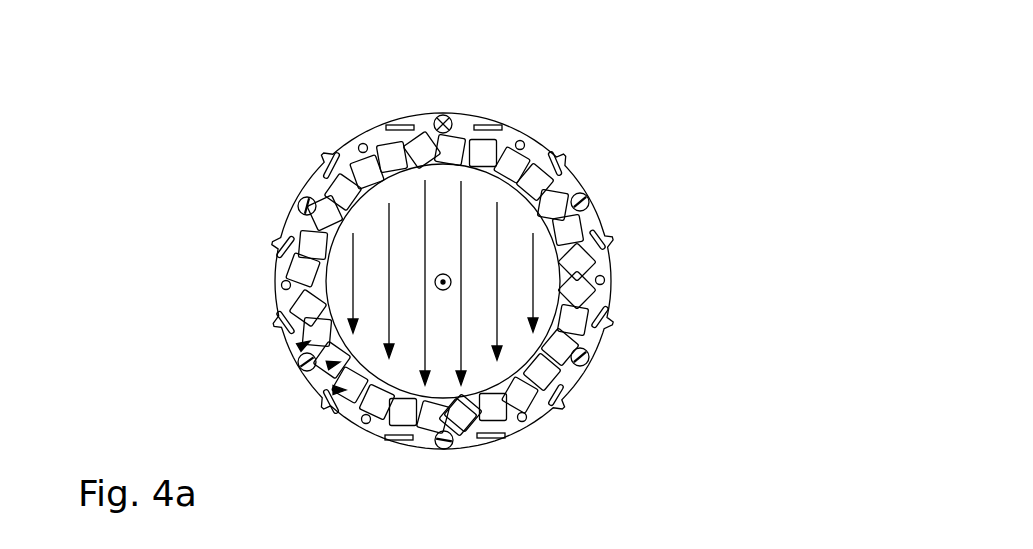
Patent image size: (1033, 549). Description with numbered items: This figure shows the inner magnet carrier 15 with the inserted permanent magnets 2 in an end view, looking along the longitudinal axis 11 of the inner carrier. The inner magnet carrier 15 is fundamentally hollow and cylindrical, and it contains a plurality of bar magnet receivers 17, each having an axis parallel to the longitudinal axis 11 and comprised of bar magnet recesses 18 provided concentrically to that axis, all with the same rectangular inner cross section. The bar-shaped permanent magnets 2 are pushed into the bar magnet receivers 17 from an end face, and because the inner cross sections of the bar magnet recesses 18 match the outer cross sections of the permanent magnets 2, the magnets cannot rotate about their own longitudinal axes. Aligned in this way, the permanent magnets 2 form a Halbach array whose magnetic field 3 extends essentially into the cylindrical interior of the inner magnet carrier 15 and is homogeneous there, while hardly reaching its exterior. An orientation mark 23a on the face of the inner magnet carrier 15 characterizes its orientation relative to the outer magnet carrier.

The permanent magnets 2 is at (330, 217).
The magnetic field 3 is at (418, 222).
The longitudinal axis 11 is at (452, 282).
The inner magnet carrier 15 is at (570, 177).
The bar magnet receivers 17 is at (330, 365).
The bar magnet recesses 18 is at (443, 442).
The orientation mark 23a is at (446, 118).